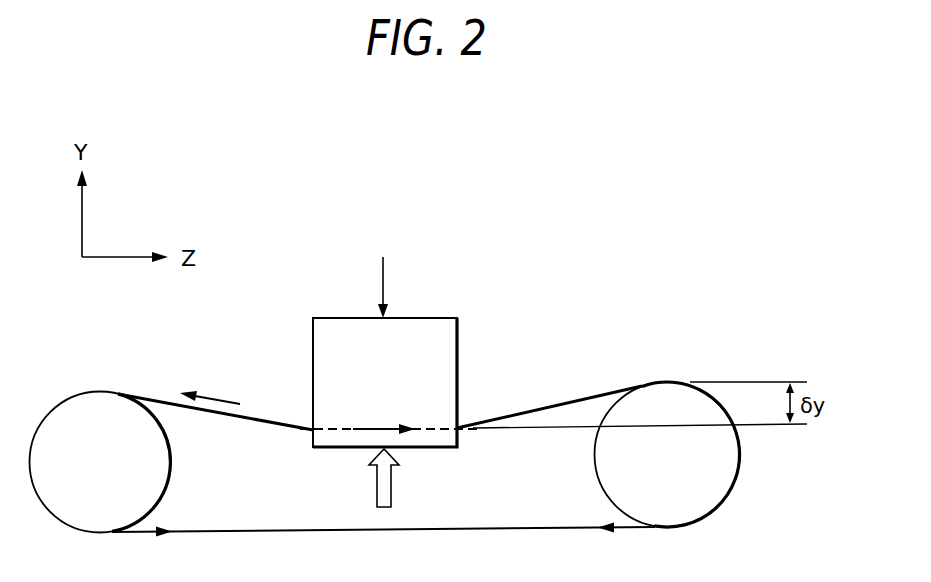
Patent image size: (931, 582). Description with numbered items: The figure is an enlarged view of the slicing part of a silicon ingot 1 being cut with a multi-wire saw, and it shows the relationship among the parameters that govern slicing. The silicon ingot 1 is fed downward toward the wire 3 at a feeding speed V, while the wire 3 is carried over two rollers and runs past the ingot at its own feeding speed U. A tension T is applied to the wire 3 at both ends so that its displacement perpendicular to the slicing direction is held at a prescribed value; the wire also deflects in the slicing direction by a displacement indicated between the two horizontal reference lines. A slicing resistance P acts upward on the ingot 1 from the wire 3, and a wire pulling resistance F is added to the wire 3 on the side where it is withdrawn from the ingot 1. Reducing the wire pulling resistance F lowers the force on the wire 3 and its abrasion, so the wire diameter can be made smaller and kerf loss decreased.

The silicon ingot 1 is at (344, 318).
The wire 3 is at (545, 405).
The feeding speed of the silicon ingot V is at (394, 287).
The wire pulling resistance F is at (390, 417).
The slicing resistance P is at (391, 478).
The tension of the wire T is at (383, 544).
The feeding speed of the wire U is at (210, 387).